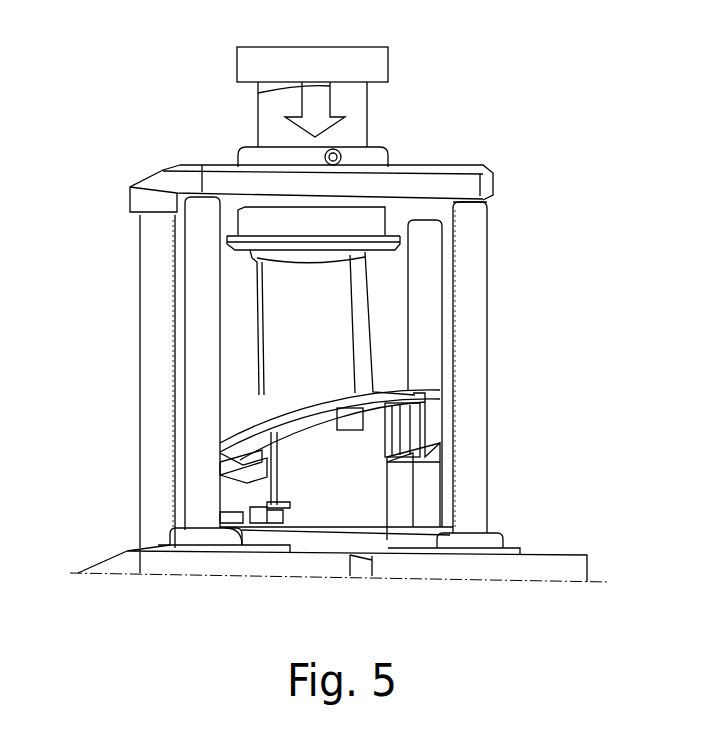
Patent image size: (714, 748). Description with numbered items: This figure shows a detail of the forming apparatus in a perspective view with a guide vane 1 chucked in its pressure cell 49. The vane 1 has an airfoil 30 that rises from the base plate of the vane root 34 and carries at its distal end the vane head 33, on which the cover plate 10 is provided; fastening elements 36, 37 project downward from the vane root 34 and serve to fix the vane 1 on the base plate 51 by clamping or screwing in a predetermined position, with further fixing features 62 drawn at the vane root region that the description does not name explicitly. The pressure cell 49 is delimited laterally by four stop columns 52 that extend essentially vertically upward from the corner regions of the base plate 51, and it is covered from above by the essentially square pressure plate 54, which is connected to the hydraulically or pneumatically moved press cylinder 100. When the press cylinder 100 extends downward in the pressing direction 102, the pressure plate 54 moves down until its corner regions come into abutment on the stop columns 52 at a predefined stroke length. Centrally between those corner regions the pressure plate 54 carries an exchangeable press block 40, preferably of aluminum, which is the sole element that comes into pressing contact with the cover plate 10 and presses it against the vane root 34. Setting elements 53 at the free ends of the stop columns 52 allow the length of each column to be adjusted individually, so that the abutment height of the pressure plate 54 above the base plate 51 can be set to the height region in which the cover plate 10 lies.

The guide vane 1 is at (338, 519).
The cover plate 10 is at (308, 314).
The airfoil 30 is at (363, 348).
The vane head 33 is at (247, 257).
The vane root 34 is at (423, 393).
The fastening element 36 is at (413, 457).
The fastening element 37 is at (283, 513).
The press block 40 is at (277, 220).
The pressure cell 49 is at (147, 168).
The base plate 51 is at (373, 527).
The stop columns 52 is at (200, 413).
The setting elements 53 is at (470, 203).
The pressure plate 54 is at (460, 180).
The locating tabs 62 is at (227, 515).
The press cylinder 100 is at (360, 118).
The pressing direction 102 is at (325, 98).